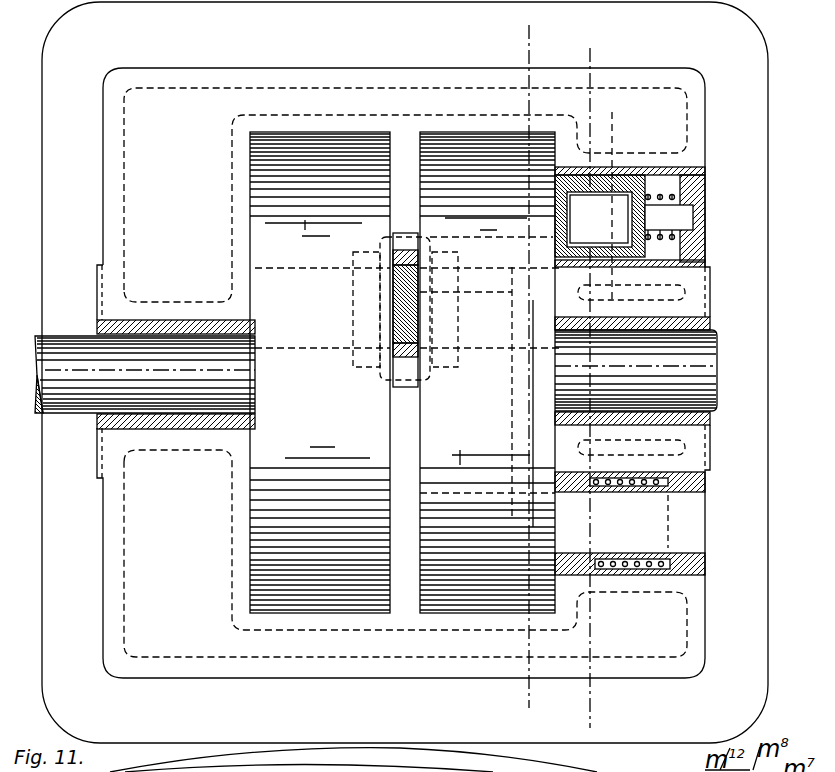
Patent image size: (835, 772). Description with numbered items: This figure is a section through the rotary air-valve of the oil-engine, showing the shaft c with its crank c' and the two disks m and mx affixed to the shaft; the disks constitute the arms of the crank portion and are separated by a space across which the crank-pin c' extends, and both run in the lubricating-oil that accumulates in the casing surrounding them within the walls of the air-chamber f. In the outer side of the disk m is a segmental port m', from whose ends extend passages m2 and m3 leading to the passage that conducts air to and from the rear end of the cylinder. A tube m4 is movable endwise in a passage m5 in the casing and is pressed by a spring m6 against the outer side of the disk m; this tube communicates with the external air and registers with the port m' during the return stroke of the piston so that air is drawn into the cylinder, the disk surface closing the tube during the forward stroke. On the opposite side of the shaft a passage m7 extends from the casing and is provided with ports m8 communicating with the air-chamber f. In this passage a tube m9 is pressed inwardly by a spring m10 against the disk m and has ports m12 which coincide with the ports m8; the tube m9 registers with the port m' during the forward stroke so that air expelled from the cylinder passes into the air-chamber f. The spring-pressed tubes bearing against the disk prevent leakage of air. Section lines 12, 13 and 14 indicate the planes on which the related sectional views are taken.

The section line 13 13 is at (533, 367).
The section line 14 14 is at (595, 388).
The air-chamber f is at (640, 97).
The section line 12 12 is at (631, 271).
The ports of tube m9 m12 is at (598, 205).
The passage m7 is at (618, 208).
The ports m8 is at (665, 196).
The spring m10 is at (705, 243).
The tube m9 is at (568, 265).
The crank c' is at (322, 284).
The shaft c is at (376, 371).
The passage m3 is at (481, 283).
The disk mx is at (320, 372).
The segmental port m' is at (490, 372).
The passage m2 is at (505, 447).
The disk m is at (487, 580).
The tube m4 is at (683, 522).
The passage m5 is at (690, 575).
The spring m6 is at (644, 578).